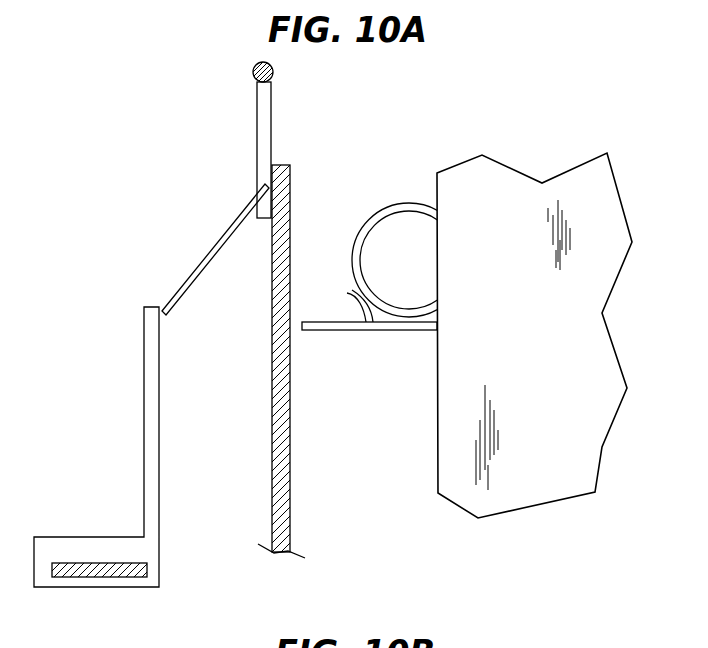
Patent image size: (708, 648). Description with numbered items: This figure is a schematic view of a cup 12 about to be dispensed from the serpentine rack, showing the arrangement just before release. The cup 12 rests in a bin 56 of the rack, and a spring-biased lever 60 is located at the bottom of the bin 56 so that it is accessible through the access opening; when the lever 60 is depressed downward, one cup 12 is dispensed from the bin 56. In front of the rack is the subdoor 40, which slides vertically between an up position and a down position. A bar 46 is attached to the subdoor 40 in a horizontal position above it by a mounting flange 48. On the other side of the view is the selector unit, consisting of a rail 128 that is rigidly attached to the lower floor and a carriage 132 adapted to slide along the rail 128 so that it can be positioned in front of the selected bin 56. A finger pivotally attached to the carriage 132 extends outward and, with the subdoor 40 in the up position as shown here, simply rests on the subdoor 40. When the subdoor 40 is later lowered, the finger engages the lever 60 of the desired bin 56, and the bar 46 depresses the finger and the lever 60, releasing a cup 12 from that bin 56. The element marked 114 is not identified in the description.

The cup 12 is at (420, 276).
The subdoor 40 is at (292, 448).
The bar 46 is at (253, 73).
The mounting flange 48 is at (258, 150).
The bin 56 is at (528, 336).
The spring-biased lever 60 is at (348, 332).
The strut 114 is at (212, 250).
The rail 128 is at (82, 562).
The carriage 132 is at (108, 588).